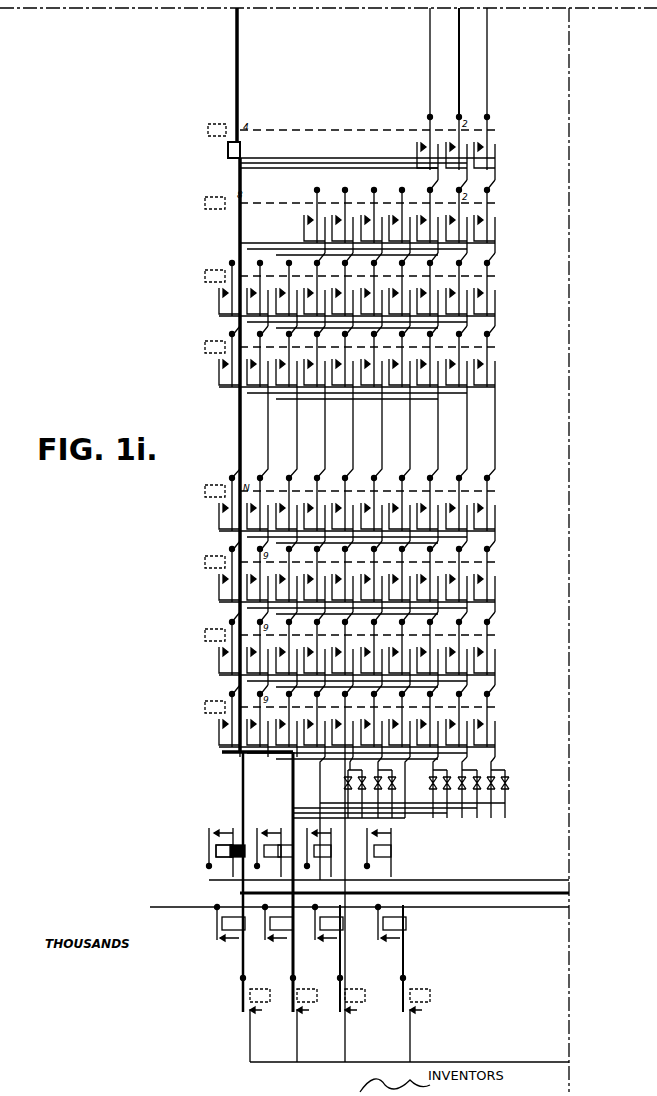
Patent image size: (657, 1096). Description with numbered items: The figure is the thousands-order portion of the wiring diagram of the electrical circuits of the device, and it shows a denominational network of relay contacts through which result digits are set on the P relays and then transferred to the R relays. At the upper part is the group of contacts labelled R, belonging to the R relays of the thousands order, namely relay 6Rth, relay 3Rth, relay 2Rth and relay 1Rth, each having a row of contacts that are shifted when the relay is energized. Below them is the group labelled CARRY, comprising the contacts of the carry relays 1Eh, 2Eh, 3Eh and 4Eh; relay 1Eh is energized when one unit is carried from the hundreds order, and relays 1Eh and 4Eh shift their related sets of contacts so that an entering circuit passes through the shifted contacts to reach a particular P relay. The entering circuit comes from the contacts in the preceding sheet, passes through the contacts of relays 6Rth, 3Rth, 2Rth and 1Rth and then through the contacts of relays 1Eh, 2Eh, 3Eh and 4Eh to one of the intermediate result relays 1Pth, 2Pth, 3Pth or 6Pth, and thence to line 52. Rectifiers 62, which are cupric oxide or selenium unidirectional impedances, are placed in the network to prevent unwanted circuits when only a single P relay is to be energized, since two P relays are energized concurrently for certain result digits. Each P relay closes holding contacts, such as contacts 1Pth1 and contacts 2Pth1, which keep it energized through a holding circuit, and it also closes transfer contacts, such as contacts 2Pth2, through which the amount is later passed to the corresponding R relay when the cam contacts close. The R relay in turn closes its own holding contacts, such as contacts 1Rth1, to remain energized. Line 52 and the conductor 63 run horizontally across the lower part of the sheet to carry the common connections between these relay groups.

The R relays R is at (497, 115).
The carry relays CARRY is at (497, 480).
The rectifiers 62 is at (505, 800).
The conductor 63 is at (498, 882).
The line 52 is at (516, 897).
The relay 6Rth is at (236, 124).
The relay 3Rth is at (205, 200).
The relay 2Rth is at (205, 273).
The relay 1Rth is at (205, 344).
The holding contacts of relay 1Rth 1Rth1 is at (222, 946).
The relay 1Eh is at (205, 491).
The relay 2Eh is at (205, 560).
The relay 3Eh is at (205, 633).
The relay 4Eh is at (205, 705).
The relay 1Pth is at (260, 1003).
The holding contacts of relay 1Pth 1Pth1 is at (245, 1010).
The relay 2Pth is at (305, 1003).
The holding contacts of relay 2Pth 2Pth1 is at (245, 845).
The transfer contacts of relay 2Pth 2Pth2 is at (298, 1018).
The relay 3Pth is at (338, 845).
The relay 6Pth is at (402, 852).